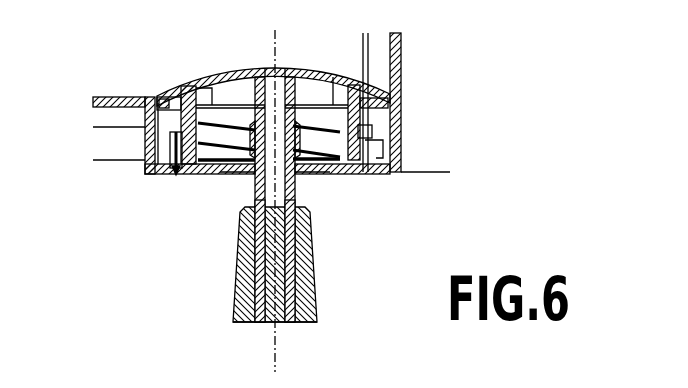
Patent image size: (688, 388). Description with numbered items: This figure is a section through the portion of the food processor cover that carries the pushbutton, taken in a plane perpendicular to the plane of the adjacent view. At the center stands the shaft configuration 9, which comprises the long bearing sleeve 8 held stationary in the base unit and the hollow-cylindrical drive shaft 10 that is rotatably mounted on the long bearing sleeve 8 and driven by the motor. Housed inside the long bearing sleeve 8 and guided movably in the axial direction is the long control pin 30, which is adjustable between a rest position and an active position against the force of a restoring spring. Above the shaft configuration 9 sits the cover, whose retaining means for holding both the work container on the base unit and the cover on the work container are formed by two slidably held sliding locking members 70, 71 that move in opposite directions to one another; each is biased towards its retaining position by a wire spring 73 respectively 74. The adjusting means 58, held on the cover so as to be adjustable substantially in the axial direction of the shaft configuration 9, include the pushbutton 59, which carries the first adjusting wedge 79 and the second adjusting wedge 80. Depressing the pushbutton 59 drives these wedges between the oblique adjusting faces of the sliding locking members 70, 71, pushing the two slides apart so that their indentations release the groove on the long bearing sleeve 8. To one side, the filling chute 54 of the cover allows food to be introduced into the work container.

The long bearing sleeve 8 is at (246, 193).
The shaft configuration 9 is at (322, 210).
The drive shaft 10 is at (236, 303).
The long control pin 30 is at (278, 326).
The filling chute 54 is at (399, 66).
The adjusting means 58 is at (172, 68).
The pushbutton 59 is at (268, 68).
The sliding locking member 70 is at (200, 175).
The sliding locking member 71 is at (125, 135).
The wire spring 73 is at (384, 141).
The wire spring 74 is at (168, 144).
The first adjusting wedge 79 is at (195, 88).
The second adjusting wedge 80 is at (347, 122).